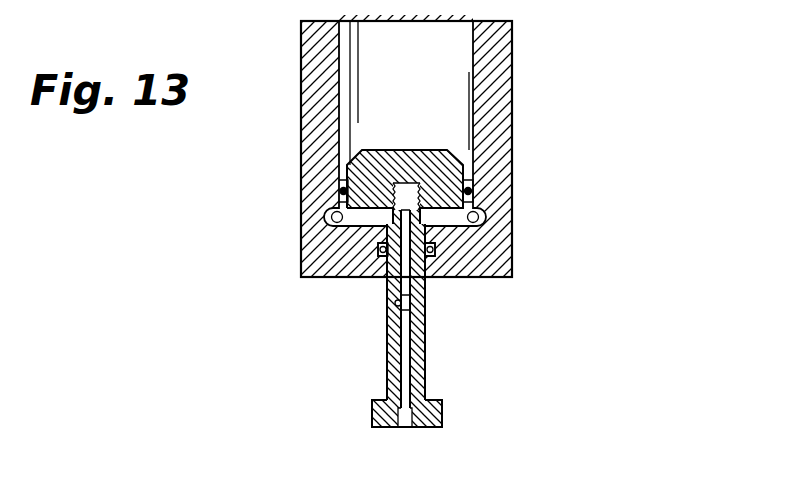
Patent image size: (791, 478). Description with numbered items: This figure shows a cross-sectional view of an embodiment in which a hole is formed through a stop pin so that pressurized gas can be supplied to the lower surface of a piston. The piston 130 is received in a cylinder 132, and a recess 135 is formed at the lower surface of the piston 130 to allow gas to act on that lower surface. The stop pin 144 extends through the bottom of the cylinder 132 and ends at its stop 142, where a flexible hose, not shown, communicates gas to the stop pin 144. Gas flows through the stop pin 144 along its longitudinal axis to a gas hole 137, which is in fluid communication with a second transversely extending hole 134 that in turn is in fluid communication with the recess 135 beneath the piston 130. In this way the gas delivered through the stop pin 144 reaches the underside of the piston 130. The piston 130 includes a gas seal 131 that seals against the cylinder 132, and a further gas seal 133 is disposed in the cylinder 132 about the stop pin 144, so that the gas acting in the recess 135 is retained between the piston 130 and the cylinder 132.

The cylinder 132 is at (497, 62).
The piston 130 is at (452, 150).
The gas seal 131 is at (340, 192).
The recess 135 is at (437, 212).
The gas seal 133 is at (433, 250).
The second transversely extending hole 134 is at (384, 258).
The gas hole 137 is at (402, 310).
The stop pin 144 is at (425, 378).
The stop 142 is at (443, 413).